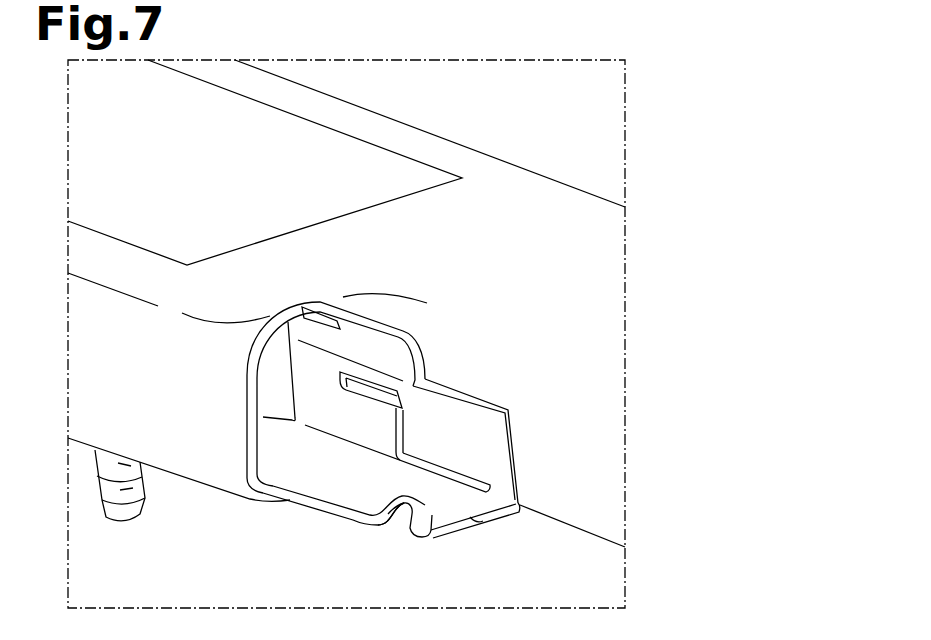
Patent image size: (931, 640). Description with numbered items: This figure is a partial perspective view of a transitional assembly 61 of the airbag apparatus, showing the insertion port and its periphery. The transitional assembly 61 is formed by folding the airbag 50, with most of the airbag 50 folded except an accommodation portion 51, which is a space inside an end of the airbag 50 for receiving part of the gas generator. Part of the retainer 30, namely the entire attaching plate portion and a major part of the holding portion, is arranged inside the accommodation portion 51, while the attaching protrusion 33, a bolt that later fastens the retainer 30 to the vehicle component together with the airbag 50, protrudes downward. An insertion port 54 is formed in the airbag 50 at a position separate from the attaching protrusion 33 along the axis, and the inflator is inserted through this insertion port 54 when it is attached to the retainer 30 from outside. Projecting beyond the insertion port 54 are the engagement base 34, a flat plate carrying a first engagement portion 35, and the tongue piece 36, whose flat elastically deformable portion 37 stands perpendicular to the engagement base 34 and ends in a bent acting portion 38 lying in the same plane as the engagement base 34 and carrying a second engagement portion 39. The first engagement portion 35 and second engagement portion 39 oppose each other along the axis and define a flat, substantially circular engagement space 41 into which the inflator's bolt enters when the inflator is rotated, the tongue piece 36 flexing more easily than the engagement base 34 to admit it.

The retainer 30 is at (405, 449).
The attaching protrusion 33 is at (100, 488).
The engagement base 34 is at (340, 498).
The first engagement portion 35 is at (379, 526).
The tongue piece 36 is at (517, 458).
The elastically deformable portion 37 is at (492, 450).
The acting portion 38 is at (518, 502).
The second engagement portion 39 is at (407, 532).
The engagement space 41 is at (395, 535).
The airbag 50 is at (346, 303).
The accommodation portion 51 is at (284, 416).
The insertion port 54 is at (250, 377).
The transitional assembly 61 is at (423, 129).